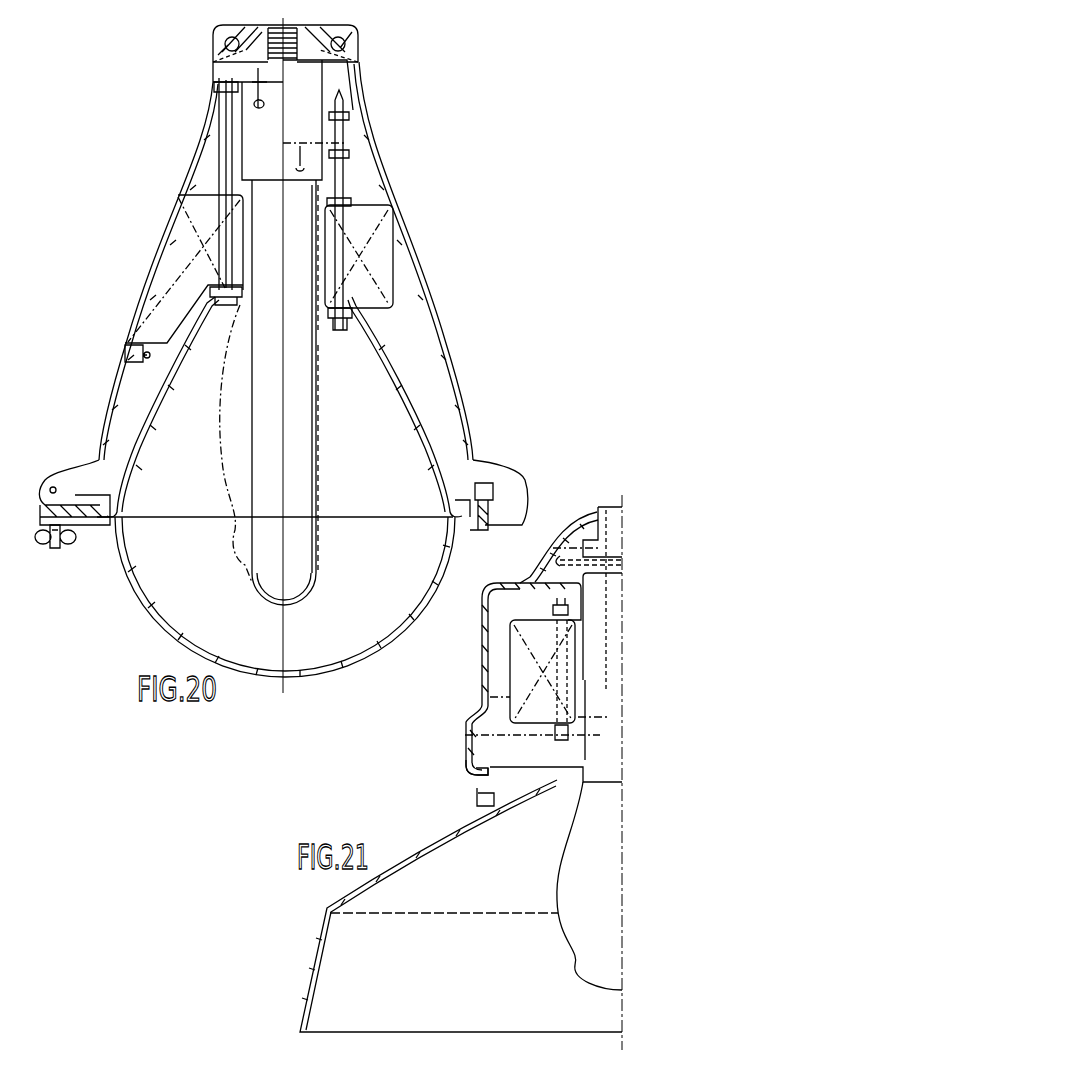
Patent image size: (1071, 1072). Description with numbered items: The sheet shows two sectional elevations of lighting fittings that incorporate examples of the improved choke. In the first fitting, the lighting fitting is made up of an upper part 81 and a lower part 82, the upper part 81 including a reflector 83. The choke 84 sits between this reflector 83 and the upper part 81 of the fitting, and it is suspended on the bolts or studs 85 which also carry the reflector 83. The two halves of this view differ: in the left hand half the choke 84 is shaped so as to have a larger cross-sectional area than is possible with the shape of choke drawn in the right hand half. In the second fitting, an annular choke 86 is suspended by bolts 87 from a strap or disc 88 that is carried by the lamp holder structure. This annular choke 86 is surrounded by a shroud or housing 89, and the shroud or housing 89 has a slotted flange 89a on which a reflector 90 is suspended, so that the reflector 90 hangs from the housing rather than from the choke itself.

In FIG. 20, the upper part 81 is at (128, 338).
In FIG. 20, the lower part 82 is at (117, 573).
In FIG. 20, the reflector 83 is at (137, 455).
In FIG. 20, the choke 84 is at (162, 257).
In FIG. 20, the bolts or studs 85 is at (222, 138).
In FIG. 21, the annular choke 86 is at (510, 642).
In FIG. 21, the bolts 87 is at (554, 607).
In FIG. 21, the strap or disc 88 is at (593, 580).
In FIG. 21, the shroud or housing 89 is at (482, 677).
In FIG. 21, the slotted flange 89a is at (467, 767).
In FIG. 21, the reflector 90 is at (418, 845).